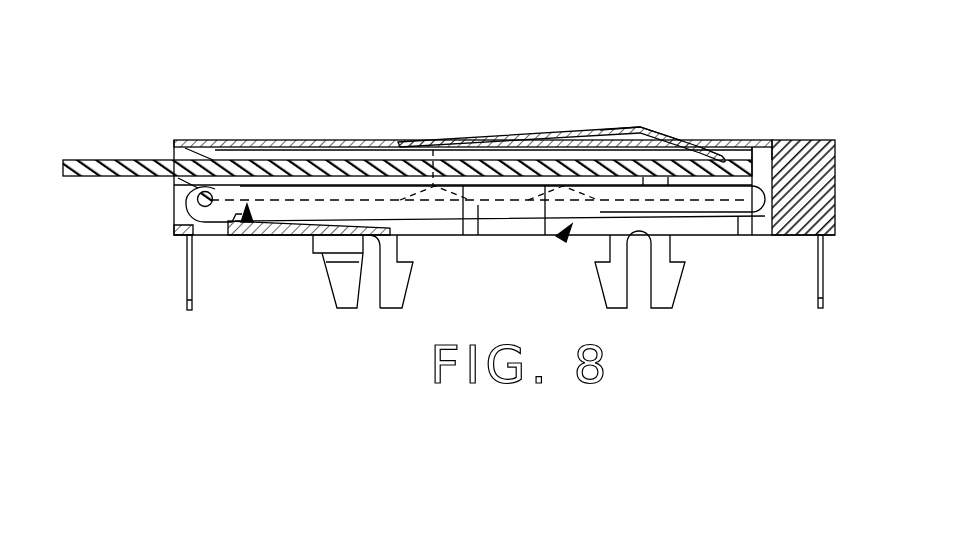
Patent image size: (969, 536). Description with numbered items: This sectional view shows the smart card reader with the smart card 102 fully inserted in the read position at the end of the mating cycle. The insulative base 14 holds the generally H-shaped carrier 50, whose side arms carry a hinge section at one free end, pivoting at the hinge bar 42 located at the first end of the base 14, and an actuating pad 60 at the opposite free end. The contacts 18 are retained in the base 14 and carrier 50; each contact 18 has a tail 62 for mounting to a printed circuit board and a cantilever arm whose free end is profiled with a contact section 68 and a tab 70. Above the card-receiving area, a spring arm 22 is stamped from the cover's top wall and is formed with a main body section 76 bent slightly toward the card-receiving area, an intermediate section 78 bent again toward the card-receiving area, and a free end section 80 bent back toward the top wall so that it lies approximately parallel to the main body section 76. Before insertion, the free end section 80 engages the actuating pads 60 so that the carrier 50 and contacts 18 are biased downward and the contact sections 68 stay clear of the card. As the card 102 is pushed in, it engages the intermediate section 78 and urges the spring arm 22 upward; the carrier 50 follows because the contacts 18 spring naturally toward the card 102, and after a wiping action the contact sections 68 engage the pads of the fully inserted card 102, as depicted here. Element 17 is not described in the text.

The base 14 is at (835, 187).
The mounting leg 17 is at (660, 290).
The contact 18 is at (285, 240).
The spring arm 22 is at (528, 135).
The hinge bar 42 is at (198, 196).
The carrier 50 is at (247, 222).
The actuating pad 60 is at (737, 218).
The tail 62 is at (825, 290).
The contact section 68 is at (432, 150).
The tab 70 is at (480, 240).
The main body section 76 is at (602, 128).
The intermediate section 78 is at (665, 140).
The free end section 80 is at (730, 148).
The smart card 102 is at (75, 158).